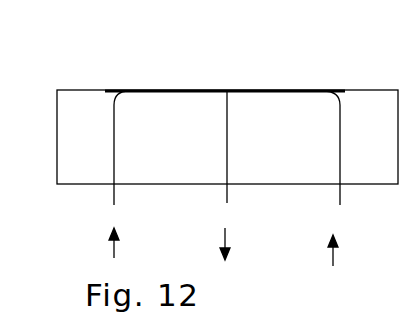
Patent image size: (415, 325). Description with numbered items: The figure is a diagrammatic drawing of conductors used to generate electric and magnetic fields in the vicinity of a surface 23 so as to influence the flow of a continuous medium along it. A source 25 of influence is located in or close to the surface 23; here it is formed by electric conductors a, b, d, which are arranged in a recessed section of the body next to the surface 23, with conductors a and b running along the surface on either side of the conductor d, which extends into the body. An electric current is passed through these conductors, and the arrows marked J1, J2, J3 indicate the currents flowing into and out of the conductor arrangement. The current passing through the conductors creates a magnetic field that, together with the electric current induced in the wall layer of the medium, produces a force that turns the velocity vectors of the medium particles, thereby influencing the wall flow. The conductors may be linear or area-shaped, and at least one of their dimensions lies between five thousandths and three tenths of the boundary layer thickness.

The surface 23 is at (111, 95).
The source of influence 25 is at (227, 90).
The conductor a is at (166, 76).
The conductor b is at (286, 76).
The conductor d is at (241, 146).
The first current J1 is at (129, 236).
The second current J2 is at (347, 240).
The third current J3 is at (238, 236).